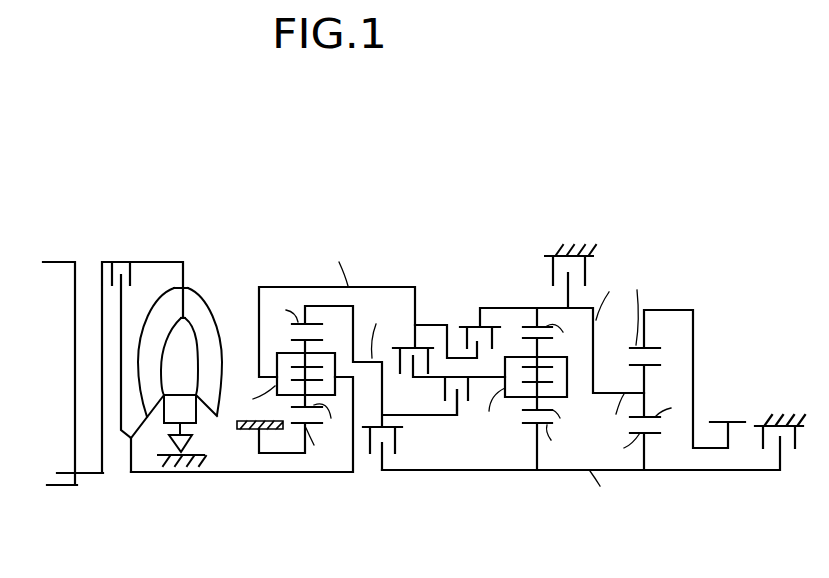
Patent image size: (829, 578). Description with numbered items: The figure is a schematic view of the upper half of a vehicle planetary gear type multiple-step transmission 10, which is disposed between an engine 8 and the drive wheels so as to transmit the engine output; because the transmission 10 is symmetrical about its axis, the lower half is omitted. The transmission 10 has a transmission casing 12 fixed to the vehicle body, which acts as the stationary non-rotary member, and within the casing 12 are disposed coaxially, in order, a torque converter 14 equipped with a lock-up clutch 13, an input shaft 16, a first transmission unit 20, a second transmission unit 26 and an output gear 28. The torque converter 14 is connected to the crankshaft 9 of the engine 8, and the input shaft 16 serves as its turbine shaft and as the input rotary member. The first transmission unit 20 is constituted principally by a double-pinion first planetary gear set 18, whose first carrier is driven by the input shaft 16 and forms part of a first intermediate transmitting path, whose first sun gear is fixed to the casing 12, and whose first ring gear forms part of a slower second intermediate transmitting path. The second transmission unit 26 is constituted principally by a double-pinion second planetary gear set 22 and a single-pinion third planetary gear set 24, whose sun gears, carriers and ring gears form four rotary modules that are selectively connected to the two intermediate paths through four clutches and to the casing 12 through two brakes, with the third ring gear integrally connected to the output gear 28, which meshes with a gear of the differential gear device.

The engine 8 is at (59, 264).
The crankshaft 9 is at (85, 470).
The vehicle planetary gear type multiple-step transmission 10 is at (428, 124).
The transmission casing 12 is at (255, 430).
The lock-up clutch 13 is at (131, 274).
The torque converter 14 is at (204, 265).
The input shaft 16 is at (180, 475).
The first planetary gear set 18 is at (304, 497).
The first transmission unit 20 is at (311, 197).
The second planetary gear set 22 is at (532, 503).
The third planetary gear set 24 is at (644, 503).
The second transmission unit 26 is at (598, 170).
The output gear 28 is at (738, 420).